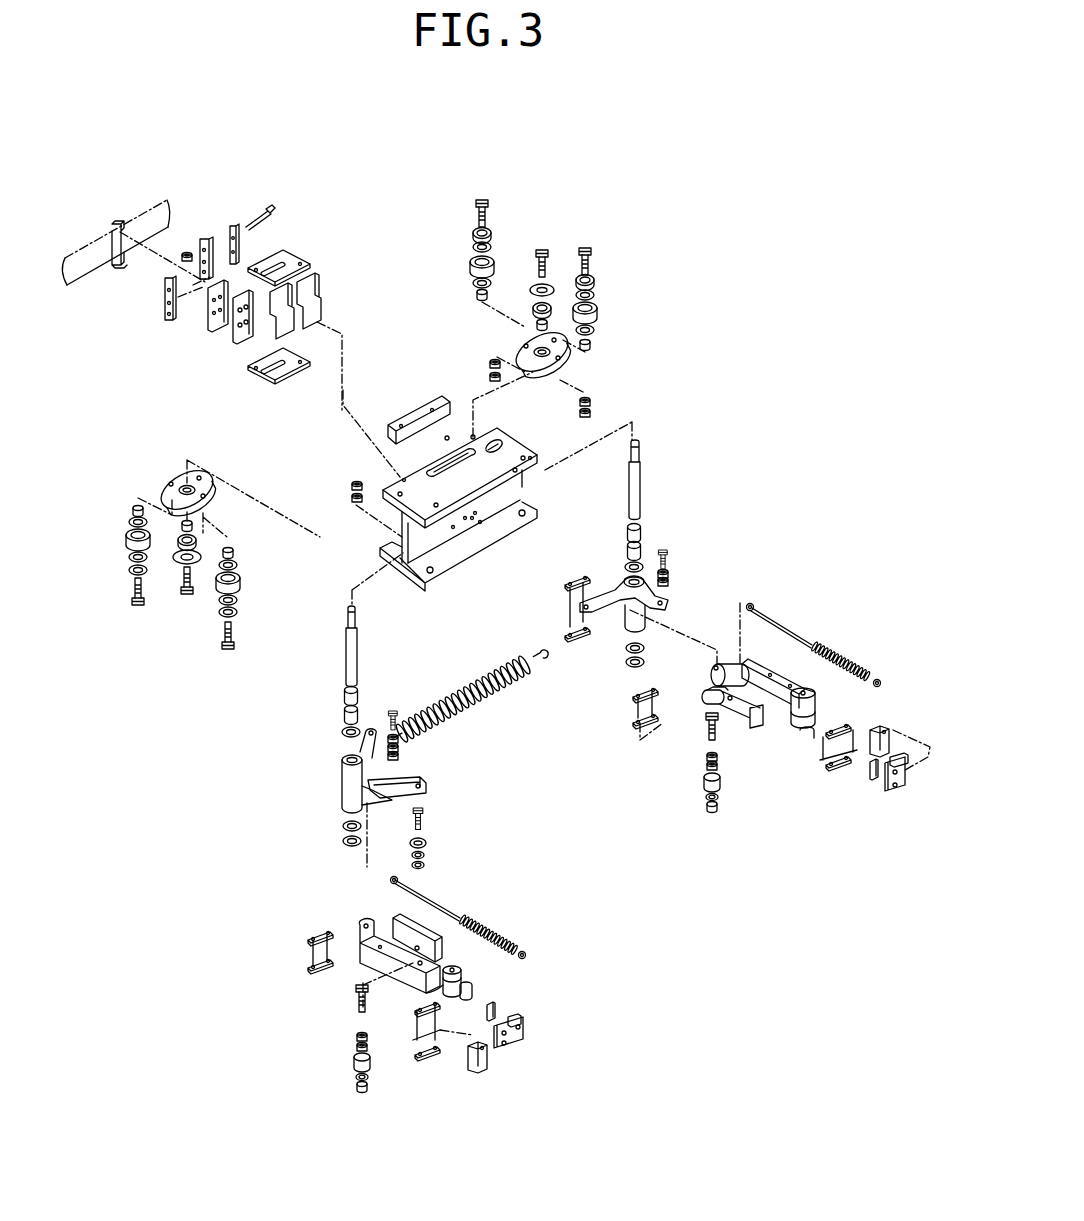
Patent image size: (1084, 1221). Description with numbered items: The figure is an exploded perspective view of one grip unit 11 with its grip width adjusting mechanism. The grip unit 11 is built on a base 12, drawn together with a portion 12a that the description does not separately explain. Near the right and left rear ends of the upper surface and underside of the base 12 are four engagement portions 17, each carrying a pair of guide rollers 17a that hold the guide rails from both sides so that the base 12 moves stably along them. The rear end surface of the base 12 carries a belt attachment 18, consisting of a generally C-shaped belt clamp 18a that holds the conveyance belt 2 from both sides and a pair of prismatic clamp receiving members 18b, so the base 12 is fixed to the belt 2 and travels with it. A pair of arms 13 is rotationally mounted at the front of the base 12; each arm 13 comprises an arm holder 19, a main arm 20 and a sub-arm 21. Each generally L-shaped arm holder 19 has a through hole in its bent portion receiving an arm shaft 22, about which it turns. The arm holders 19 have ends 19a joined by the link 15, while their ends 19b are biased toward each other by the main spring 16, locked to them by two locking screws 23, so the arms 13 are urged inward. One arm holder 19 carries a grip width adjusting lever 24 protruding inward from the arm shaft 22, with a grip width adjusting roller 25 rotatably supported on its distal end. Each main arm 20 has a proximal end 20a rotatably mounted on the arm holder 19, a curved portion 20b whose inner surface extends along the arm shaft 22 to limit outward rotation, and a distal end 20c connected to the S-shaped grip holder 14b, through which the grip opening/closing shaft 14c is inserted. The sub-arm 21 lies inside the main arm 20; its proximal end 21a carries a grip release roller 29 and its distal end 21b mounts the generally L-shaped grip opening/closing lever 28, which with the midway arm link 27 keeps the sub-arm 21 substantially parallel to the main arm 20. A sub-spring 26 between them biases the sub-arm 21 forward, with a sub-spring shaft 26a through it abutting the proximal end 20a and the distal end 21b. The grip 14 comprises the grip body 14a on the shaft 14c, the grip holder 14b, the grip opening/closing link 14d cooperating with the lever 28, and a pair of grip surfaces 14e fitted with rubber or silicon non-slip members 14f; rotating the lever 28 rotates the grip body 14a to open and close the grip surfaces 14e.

The conveyance belt 2 is at (92, 260).
The grip unit 11 is at (364, 179).
The base 12 is at (511, 451).
The bracket hole 12a is at (474, 520).
The arm 13 is at (281, 787).
The grip 14 is at (662, 876).
The grip body 14a is at (523, 1033).
The grip holder 14b is at (445, 968).
The grip opening/closing shaft 14c is at (443, 980).
The grip opening/closing link 14d is at (473, 1060).
The grip surfaces 14e is at (462, 985).
The non-slip members 14f is at (493, 1005).
The link 15 is at (567, 632).
The main spring 16 is at (488, 690).
The engagement portions 17 is at (544, 240).
The guide rollers 17a is at (472, 267).
The belt attachment 18 is at (218, 287).
The belt clamp 18a is at (112, 222).
The clamp receiving members 18b is at (204, 238).
The arm holder 19 is at (348, 785).
The ends of arm holders 19a is at (370, 730).
The ends of arm holders 19b is at (358, 793).
The main arm 20 is at (383, 965).
The proximal end of main arm 20a is at (713, 678).
The curved portion 20b is at (728, 663).
The distal end of main arm 20c is at (800, 690).
The sub-arm 21 is at (393, 918).
The proximal end of sub-arm 21a is at (727, 703).
The distal end of sub-arm 21b is at (755, 730).
The arm shaft 22 is at (350, 660).
The locking screws 23 is at (395, 712).
The grip width adjusting lever 24 is at (412, 778).
The grip width adjusting roller 25 is at (422, 867).
The sub-spring 26 is at (482, 925).
The sub-spring shaft 26a is at (423, 893).
The arm link 27 is at (310, 962).
The grip opening/closing lever 28 is at (417, 1047).
The grip release roller 29 is at (357, 1062).